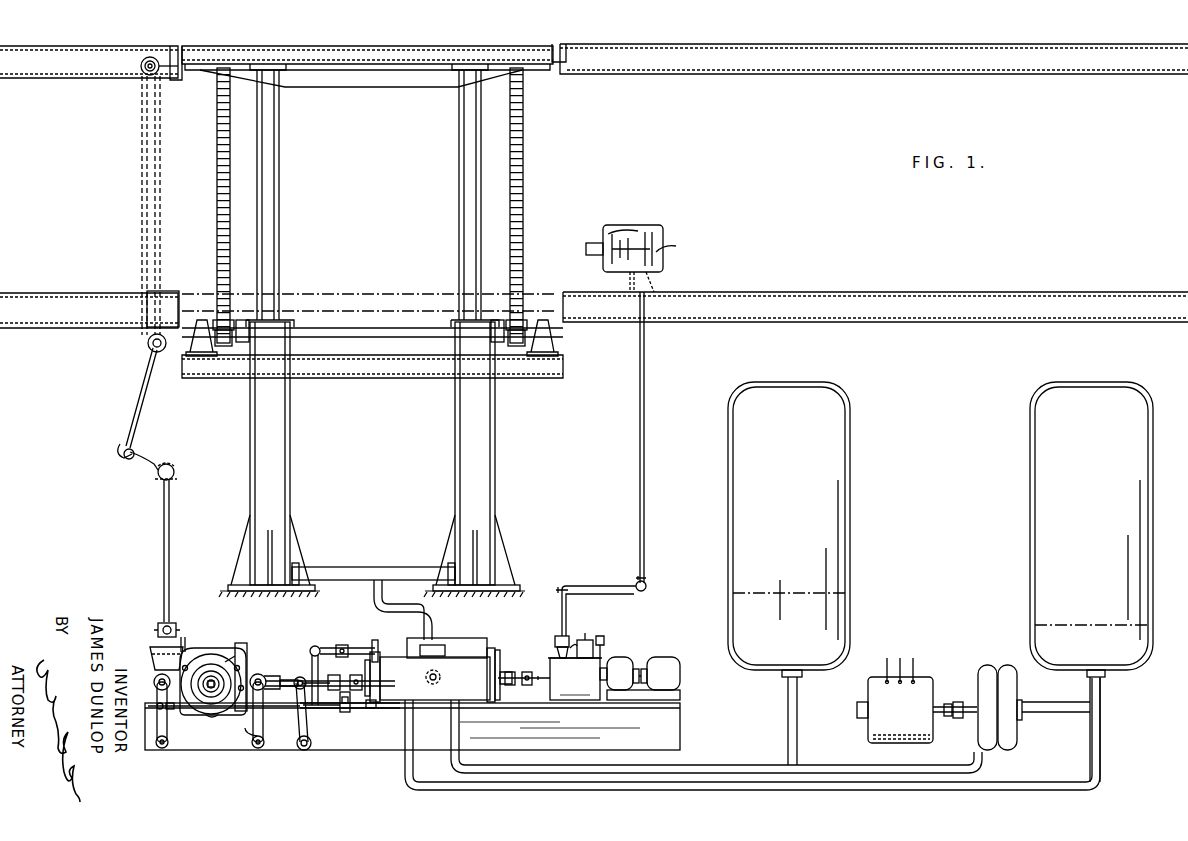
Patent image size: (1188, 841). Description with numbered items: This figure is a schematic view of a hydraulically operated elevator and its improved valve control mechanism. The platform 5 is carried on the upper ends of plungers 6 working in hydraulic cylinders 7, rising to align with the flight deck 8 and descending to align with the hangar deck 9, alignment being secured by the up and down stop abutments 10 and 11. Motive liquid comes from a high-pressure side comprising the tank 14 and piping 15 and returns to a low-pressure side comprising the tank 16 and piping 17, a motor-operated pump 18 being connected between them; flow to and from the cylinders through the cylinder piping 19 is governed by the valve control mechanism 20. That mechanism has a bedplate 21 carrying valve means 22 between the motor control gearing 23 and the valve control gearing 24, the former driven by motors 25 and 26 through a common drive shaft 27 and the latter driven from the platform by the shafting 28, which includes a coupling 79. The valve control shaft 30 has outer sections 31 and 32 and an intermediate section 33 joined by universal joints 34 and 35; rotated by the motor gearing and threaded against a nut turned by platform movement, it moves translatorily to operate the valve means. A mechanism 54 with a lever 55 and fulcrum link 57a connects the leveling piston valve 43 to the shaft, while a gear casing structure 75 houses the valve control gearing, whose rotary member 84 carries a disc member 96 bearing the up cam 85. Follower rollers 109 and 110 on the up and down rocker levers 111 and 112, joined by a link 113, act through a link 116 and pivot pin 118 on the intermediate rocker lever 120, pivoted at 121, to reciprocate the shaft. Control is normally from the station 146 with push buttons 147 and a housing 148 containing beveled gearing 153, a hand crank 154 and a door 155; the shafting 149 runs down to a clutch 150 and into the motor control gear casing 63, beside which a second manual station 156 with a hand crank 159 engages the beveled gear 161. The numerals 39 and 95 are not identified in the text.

The platform 5 is at (351, 46).
The plungers 6 is at (279, 155).
The hydraulic cylinders 7 is at (289, 467).
The flight deck 8 is at (658, 44).
The hangar deck 9 is at (893, 291).
The up stop abutment 10 is at (177, 44).
The down stop abutment 11 is at (200, 328).
The tank 14 is at (846, 521).
The high-pressure piping 15 is at (466, 736).
The tank 16 is at (1044, 520).
The low-pressure piping 17 is at (404, 769).
The motor-operated pump 18 is at (973, 704).
The cylinder piping 19 is at (374, 600).
The valve control mechanism 20 is at (432, 658).
The bedplate 21 is at (674, 726).
The valve means 22 is at (433, 684).
The motor control gearing 23 is at (575, 679).
The valve control gearing 24 is at (213, 671).
The motor 25 is at (642, 668).
The motor 26 is at (664, 658).
The common drive shaft 27 is at (612, 662).
The shafting 28 is at (160, 485).
The valve control shaft 30 is at (524, 669).
The outer shaft section 31 is at (533, 666).
The outer shaft section 32 is at (330, 671).
The intermediate shaft section 33 is at (510, 690).
The universal joint 34 is at (530, 690).
The universal joint 35 is at (356, 671).
The rod 39 is at (386, 710).
The leveling piston valve 43 is at (362, 650).
The mechanism 54 is at (333, 640).
The lever 55 is at (312, 656).
The fulcrum link 57a is at (346, 712).
The motor control gear casing 63 is at (570, 700).
The gear casing structure 75 is at (190, 638).
The coupling 79 is at (157, 637).
The rotary member 84 is at (230, 662).
The up cam 85 is at (158, 662).
The link 95 is at (305, 702).
The disc member 96 is at (219, 654).
The up follower roller 109 is at (262, 677).
The down follower roller 110 is at (158, 679).
The up rocker lever 111 is at (256, 741).
The down rocker lever 112 is at (161, 730).
The link 113 is at (256, 728).
The link 116 is at (160, 706).
The removable pivot pin 118 is at (298, 678).
The intermediate rocker lever 120 is at (298, 743).
The pivot 121 is at (305, 746).
The control station 146 is at (624, 234).
The push buttons 147 is at (650, 230).
The housing 148 is at (605, 233).
The shafting 149 is at (660, 437).
The clutch 150 is at (587, 611).
The beveled gearing 153 is at (627, 266).
The hand crank 154 is at (658, 254).
The door 155 is at (657, 267).
The manual control station 156 is at (588, 635).
The hand crank 159 is at (604, 636).
The beveled gear 161 is at (557, 650).